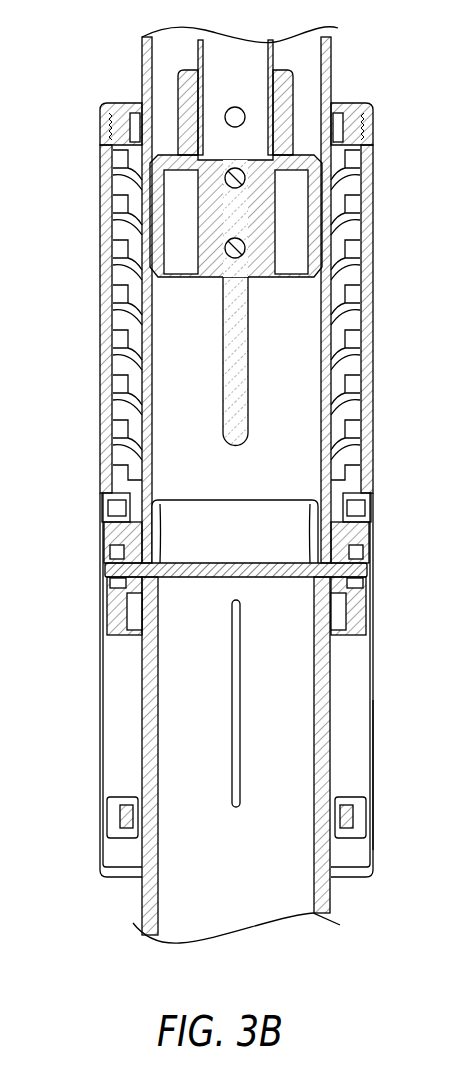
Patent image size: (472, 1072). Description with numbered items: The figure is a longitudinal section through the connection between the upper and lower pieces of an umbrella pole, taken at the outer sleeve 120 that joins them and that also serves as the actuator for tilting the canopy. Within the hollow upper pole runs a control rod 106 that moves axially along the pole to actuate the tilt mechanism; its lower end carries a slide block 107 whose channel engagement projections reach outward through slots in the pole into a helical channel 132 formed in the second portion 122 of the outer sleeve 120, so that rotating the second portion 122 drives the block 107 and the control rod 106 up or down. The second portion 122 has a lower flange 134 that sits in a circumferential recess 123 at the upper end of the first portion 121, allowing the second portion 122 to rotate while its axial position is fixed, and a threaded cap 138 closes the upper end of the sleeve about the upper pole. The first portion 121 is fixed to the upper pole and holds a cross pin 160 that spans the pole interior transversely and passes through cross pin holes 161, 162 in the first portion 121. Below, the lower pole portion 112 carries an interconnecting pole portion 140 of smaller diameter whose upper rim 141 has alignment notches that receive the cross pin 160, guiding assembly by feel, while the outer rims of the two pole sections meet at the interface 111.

The control rod 106 is at (275, 52).
The slide block 107 is at (297, 162).
The interface 111 is at (140, 888).
The lower pole portion 112 is at (330, 902).
The outer sleeve 120 is at (98, 229).
The first portion 121 is at (372, 762).
The second portion 122 is at (360, 292).
The circumferential recess 123 is at (362, 508).
The helical channel 132 is at (347, 371).
The lower flange 134 is at (130, 508).
The cap 138 is at (122, 128).
The interconnecting pole portion 140 is at (322, 618).
The upper rim 141 is at (252, 508).
The cross pin 160 is at (210, 572).
The cross pin hole 161 is at (98, 578).
The cross pin hole 162 is at (372, 572).